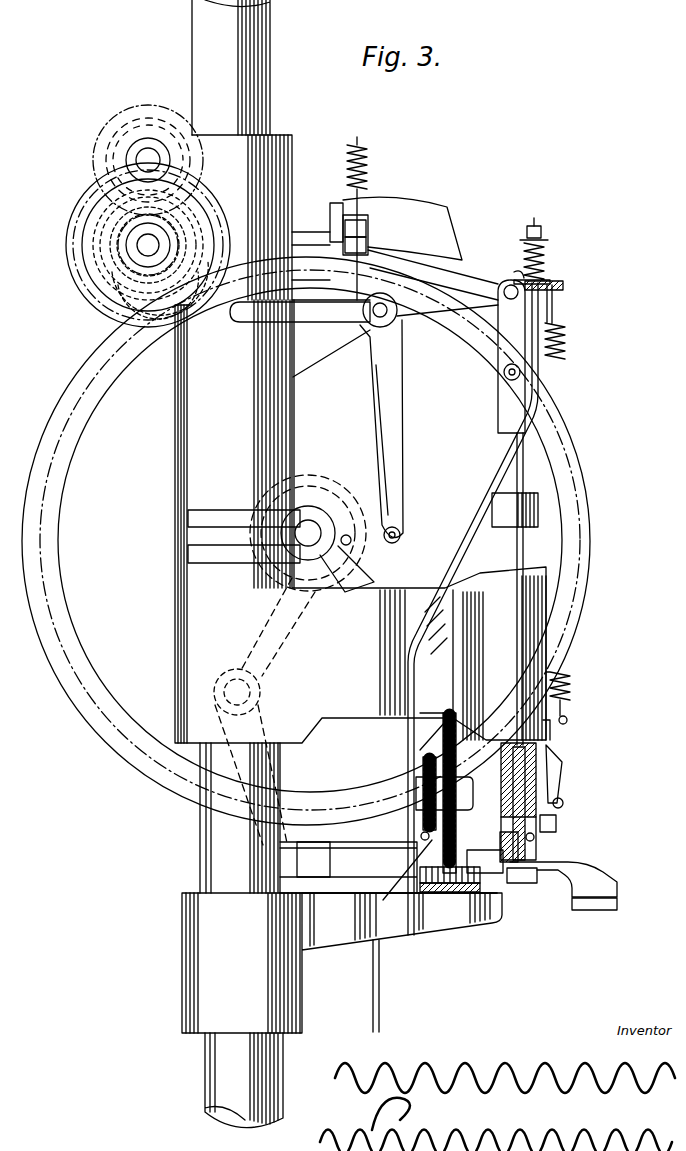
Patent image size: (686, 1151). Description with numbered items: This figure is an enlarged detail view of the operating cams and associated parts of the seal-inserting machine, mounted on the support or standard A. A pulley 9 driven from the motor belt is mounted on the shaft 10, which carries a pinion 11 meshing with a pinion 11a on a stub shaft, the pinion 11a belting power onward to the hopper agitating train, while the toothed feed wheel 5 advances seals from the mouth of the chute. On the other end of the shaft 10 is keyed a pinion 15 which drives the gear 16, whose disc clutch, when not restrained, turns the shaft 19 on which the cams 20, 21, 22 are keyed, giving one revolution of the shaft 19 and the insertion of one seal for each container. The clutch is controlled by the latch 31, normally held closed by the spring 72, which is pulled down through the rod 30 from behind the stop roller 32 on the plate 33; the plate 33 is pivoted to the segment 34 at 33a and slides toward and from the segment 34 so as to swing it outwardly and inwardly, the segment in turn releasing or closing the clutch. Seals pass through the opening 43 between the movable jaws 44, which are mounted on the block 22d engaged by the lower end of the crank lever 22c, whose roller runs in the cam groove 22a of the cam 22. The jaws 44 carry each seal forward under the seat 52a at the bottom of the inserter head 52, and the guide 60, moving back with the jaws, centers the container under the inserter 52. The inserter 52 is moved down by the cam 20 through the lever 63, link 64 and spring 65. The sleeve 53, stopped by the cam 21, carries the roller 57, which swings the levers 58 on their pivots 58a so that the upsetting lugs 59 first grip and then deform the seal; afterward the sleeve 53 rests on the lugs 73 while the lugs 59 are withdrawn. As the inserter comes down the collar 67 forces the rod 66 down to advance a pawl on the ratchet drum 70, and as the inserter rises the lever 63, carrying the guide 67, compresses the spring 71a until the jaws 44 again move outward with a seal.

The standard A is at (250, 68).
The toothed feed wheel 5 is at (455, 713).
The pulley 9 is at (72, 258).
The shaft 10 is at (158, 248).
The pinion 11 is at (95, 237).
The pinion 11a is at (145, 118).
The pinion 15 is at (92, 295).
The gear 16 is at (58, 405).
The shaft 19 is at (310, 533).
The cam 20 is at (350, 500).
The cam 21 is at (395, 462).
The cam 22 is at (320, 440).
The cam groove 22a is at (378, 576).
The crank lever 22c is at (280, 711).
The block 22d is at (312, 842).
The rod 30 is at (415, 263).
The latch 31 is at (368, 238).
The stop roller 32 is at (368, 226).
The plate 33 is at (335, 203).
The pivot 33a is at (361, 227).
The segment 34 is at (428, 203).
The opening 43 is at (452, 893).
The jaws 44 is at (521, 883).
The inserter head 52 is at (522, 476).
The seat 52a is at (510, 887).
The sleeve 53 is at (526, 541).
The roller 57 is at (564, 803).
The levers 58 is at (556, 773).
The pivots 58a is at (535, 838).
The upsetting lug 59 is at (580, 861).
The guide 60 is at (606, 881).
The lever 63 is at (401, 405).
The link 64 is at (498, 345).
The spring 65 is at (572, 688).
The rod 66 is at (468, 535).
The collar 67 is at (520, 280).
The ratchet drum 70 is at (423, 766).
The spring 71a is at (546, 252).
The spring 72 is at (365, 157).
The lugs 73 is at (556, 818).